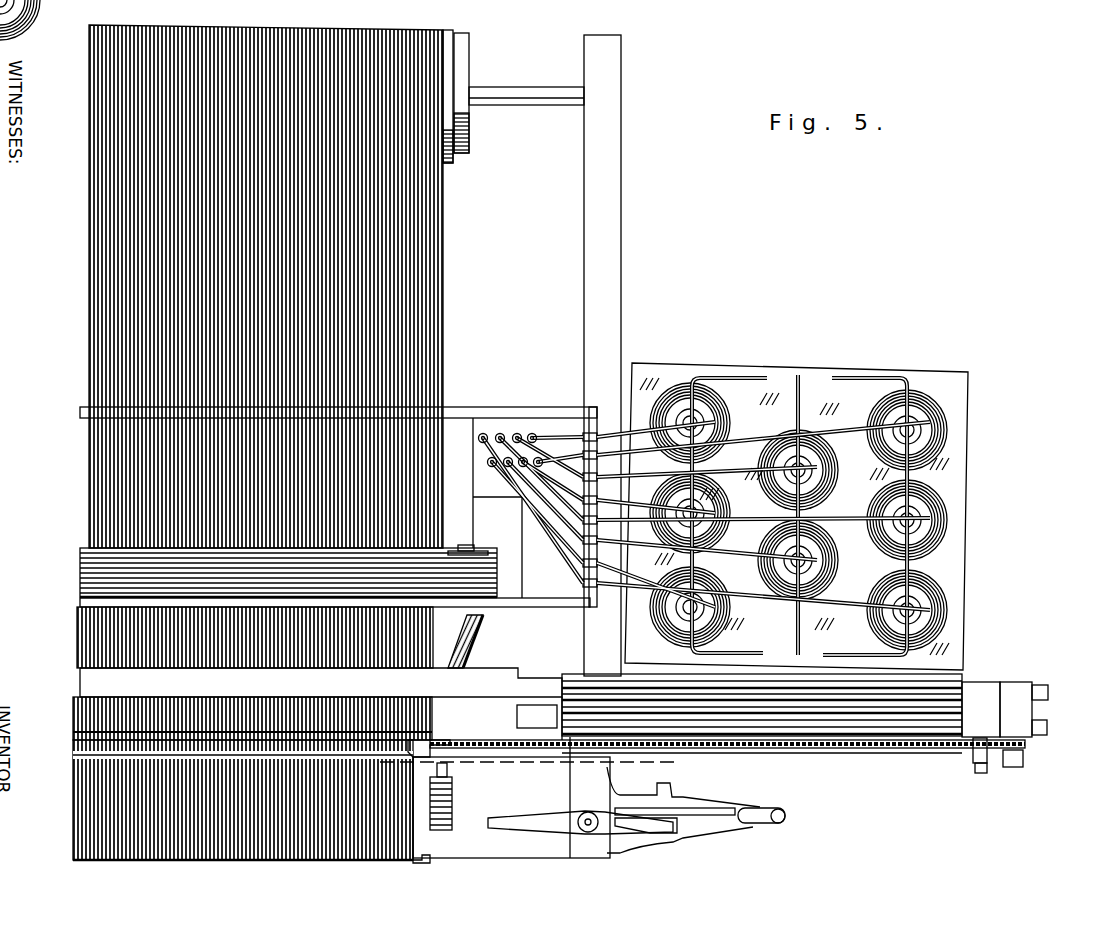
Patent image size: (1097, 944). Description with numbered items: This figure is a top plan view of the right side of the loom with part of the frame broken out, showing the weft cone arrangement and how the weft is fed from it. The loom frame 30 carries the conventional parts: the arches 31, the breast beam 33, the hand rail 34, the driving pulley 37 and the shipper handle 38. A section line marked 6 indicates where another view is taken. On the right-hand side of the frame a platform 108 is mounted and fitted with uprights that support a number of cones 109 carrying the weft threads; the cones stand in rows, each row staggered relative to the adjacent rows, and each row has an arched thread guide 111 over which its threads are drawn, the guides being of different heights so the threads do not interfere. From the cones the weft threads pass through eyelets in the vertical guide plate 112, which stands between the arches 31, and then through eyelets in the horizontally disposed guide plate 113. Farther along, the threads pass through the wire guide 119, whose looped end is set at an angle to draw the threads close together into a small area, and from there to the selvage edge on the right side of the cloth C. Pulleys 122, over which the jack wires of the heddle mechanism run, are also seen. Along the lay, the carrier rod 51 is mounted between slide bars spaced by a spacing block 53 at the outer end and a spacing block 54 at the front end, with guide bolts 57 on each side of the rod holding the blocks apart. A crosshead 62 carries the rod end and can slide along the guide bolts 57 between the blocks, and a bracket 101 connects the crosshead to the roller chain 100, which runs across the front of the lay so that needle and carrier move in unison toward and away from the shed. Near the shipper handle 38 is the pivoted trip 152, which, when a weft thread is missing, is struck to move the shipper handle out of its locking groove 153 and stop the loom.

The frame 30 is at (612, 298).
The section line 6- 6 is at (441, 531).
The arches 31 is at (510, 407).
The guide plate 113 is at (488, 500).
The guide plate 112 is at (588, 593).
The pulleys 122 is at (478, 556).
The wire guide 119 is at (481, 622).
The hand rail 34 is at (321, 704).
The spacing block 54 is at (537, 717).
The rod 51 is at (745, 706).
The guide bolt 57 is at (848, 690).
The roller chain 100 is at (882, 747).
The crosshead 62 is at (975, 692).
The spacing block 53 is at (1024, 695).
The bracket 101 is at (975, 760).
The breast beam 33 is at (511, 797).
The driving pulley 37 is at (452, 784).
The pivoted trip 152 is at (520, 827).
The locking groove 153 is at (645, 820).
The shipper handle 38 is at (770, 822).
The cloth C is at (407, 866).
The platform 108 is at (963, 387).
The cones 109 is at (930, 497).
The arched thread guide 111 is at (737, 378).